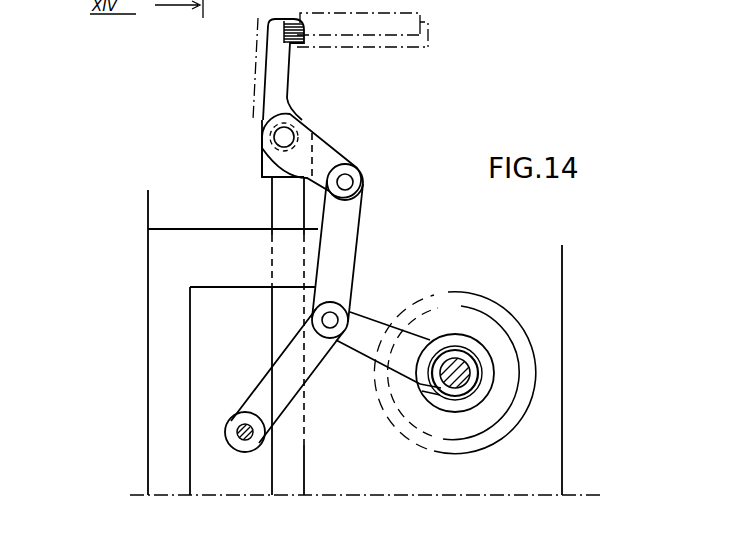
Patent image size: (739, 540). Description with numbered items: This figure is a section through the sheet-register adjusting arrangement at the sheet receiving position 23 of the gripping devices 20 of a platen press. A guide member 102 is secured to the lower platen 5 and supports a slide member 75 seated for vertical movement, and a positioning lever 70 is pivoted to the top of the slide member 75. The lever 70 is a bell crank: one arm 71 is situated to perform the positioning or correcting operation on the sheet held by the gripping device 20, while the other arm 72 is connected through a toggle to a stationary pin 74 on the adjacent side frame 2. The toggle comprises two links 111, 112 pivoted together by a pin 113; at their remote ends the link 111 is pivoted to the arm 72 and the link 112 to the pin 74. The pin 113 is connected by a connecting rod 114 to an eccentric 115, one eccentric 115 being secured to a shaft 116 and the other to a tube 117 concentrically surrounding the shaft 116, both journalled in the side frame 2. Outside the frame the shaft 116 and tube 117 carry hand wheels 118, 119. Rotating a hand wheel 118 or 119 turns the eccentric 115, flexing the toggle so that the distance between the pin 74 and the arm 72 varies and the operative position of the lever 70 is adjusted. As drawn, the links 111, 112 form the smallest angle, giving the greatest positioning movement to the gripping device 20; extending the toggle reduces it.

The side frame 2 is at (563, 284).
The lower platen 5 is at (149, 210).
The guide member 102 is at (211, 229).
The slide member 75 is at (272, 318).
The positioning lever 70 is at (284, 95).
The arm 71 is at (287, 68).
The gripping device 20 is at (372, 48).
The sheet receiving position 23 is at (408, 48).
The arm 72 is at (327, 157).
The link 111 is at (357, 228).
The pin 113 is at (340, 318).
The link 112 is at (316, 358).
The stationary pin 74 is at (245, 438).
The eccentric 115 is at (472, 393).
The shaft 116 is at (440, 390).
The tube 117 is at (456, 393).
The hand wheel 118 is at (467, 308).
The hand wheel 119 is at (503, 310).
The connecting rod 114 is at (397, 318).